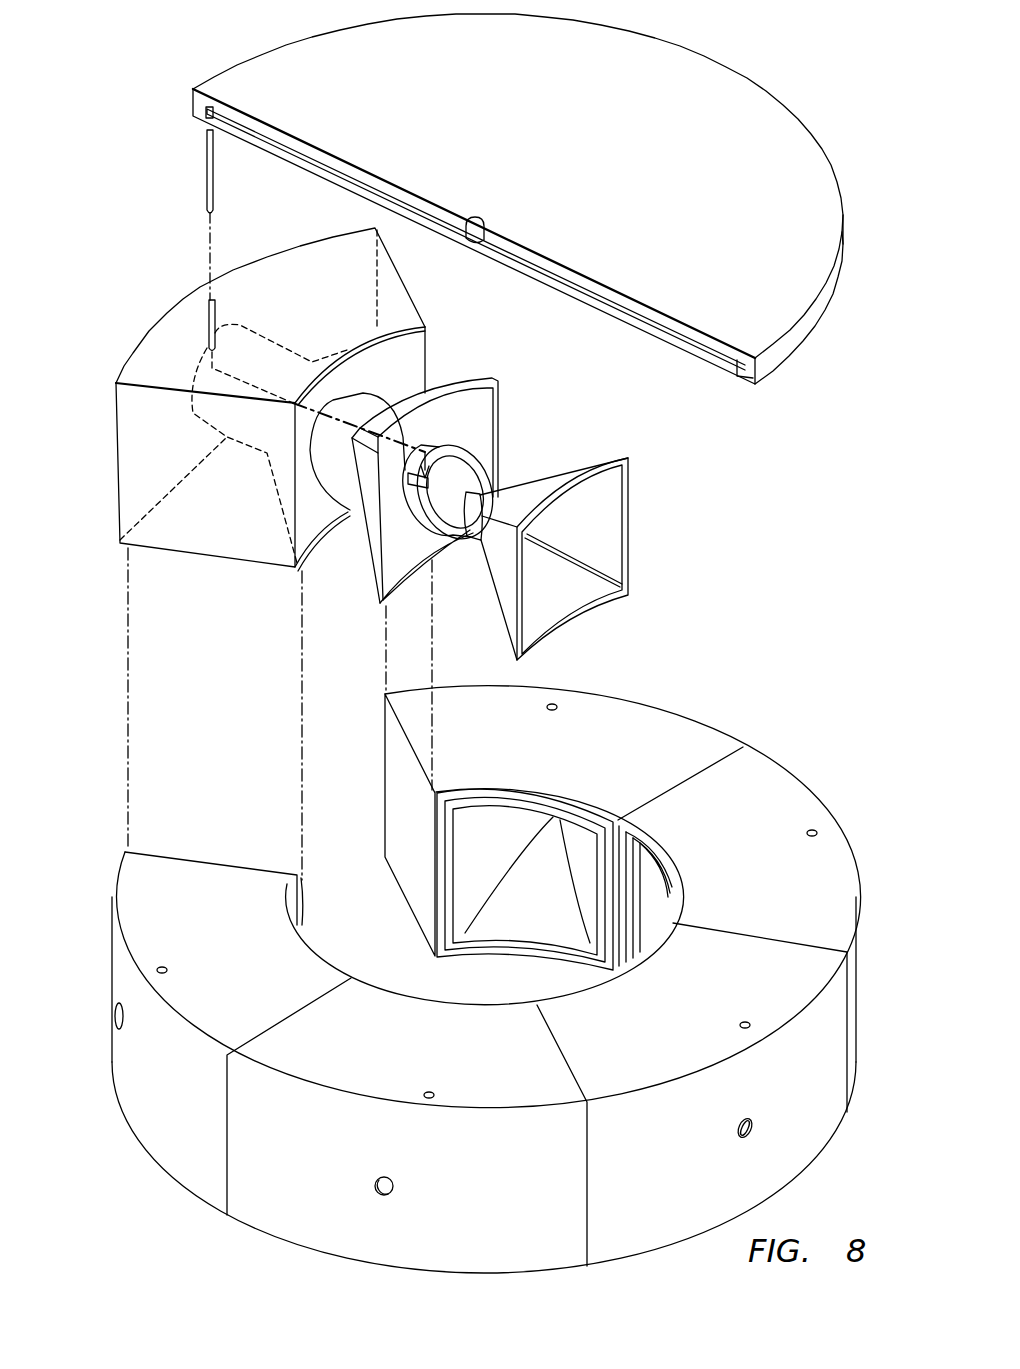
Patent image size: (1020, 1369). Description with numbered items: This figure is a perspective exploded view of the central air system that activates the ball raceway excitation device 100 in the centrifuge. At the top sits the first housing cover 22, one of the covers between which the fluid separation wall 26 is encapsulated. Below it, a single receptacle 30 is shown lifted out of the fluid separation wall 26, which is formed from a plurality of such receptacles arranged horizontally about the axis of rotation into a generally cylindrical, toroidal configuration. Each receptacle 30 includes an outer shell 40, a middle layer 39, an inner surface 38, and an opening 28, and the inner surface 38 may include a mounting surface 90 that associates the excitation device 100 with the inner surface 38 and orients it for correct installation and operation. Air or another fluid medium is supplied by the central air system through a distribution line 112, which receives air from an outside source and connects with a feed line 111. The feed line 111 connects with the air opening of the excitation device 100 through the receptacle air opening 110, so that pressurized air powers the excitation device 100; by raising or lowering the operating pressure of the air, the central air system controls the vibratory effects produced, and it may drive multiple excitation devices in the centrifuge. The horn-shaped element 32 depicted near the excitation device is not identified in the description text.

The first housing cover 22 is at (680, 63).
The distribution line 112 is at (318, 152).
The feed line 111 is at (208, 186).
The receptacle air opening 110 is at (212, 300).
The receptacle 30 is at (128, 325).
The outer shell 40 is at (128, 450).
The middle layer 39 is at (484, 415).
The ball raceway excitation device 100 is at (450, 448).
The mounting surface 90 is at (452, 528).
The horn antenna 32 is at (581, 559).
The inner surface 38 is at (628, 560).
The fluid separation wall 26 is at (451, 979).
The opening 28 is at (115, 1018).